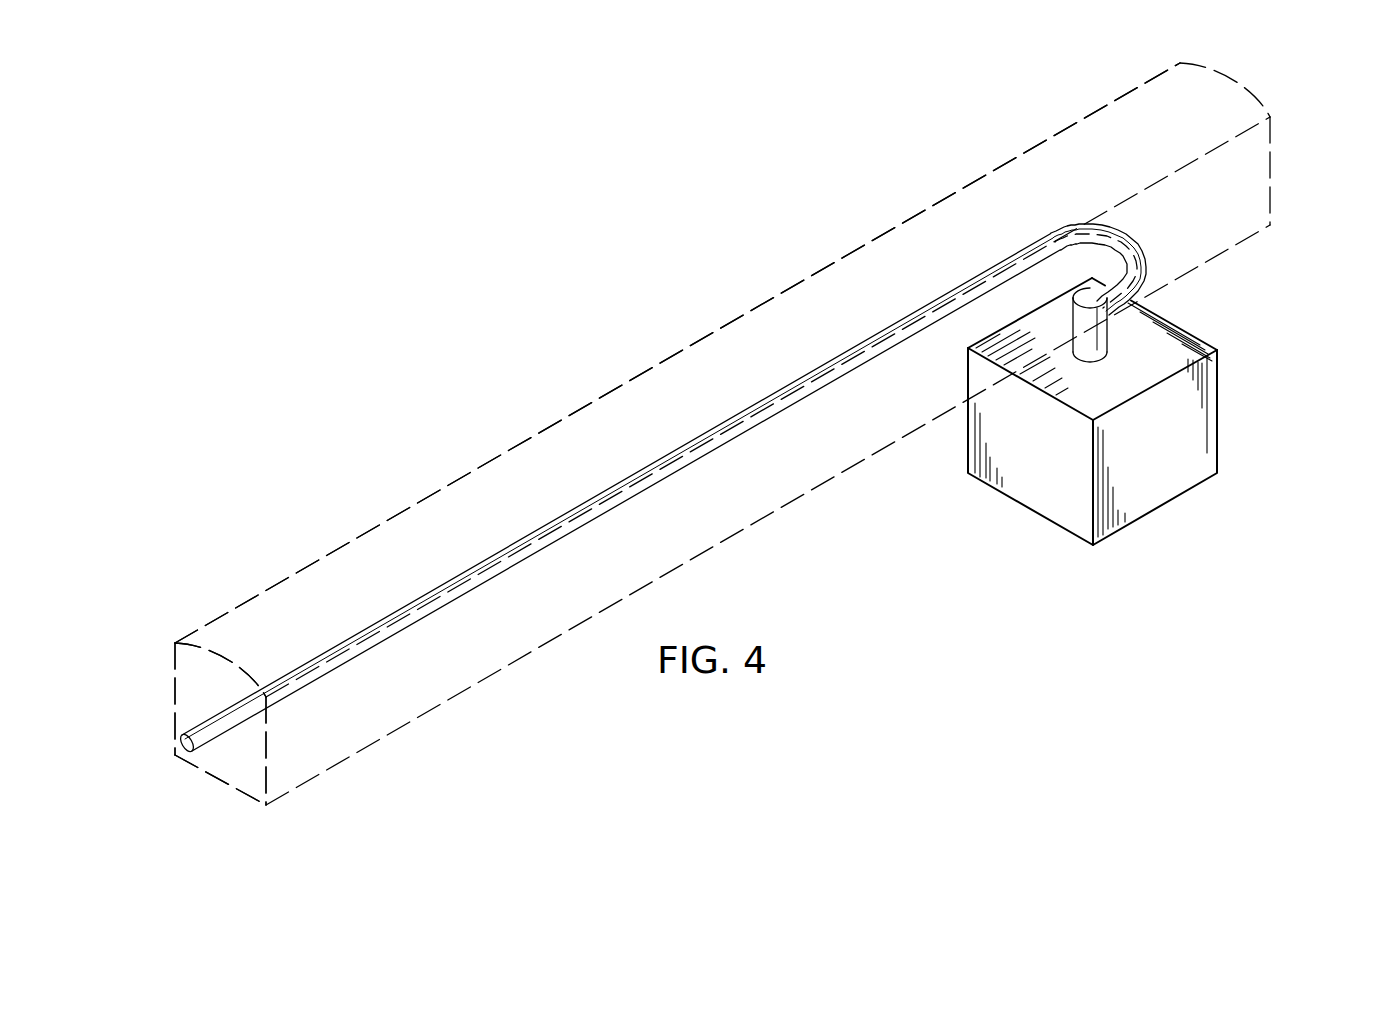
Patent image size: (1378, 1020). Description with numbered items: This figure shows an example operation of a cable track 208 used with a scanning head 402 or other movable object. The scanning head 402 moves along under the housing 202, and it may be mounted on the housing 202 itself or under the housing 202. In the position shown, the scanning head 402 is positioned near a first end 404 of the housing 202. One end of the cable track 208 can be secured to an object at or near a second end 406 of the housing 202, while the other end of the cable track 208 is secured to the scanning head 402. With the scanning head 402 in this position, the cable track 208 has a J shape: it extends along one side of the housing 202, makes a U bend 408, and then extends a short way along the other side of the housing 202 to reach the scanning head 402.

The housing 202 is at (631, 369).
The cable track 208 is at (446, 570).
The scanning head 402 is at (1163, 496).
The first end 404 is at (1287, 164).
The second end 406 is at (158, 712).
The U bend 408 is at (1148, 263).